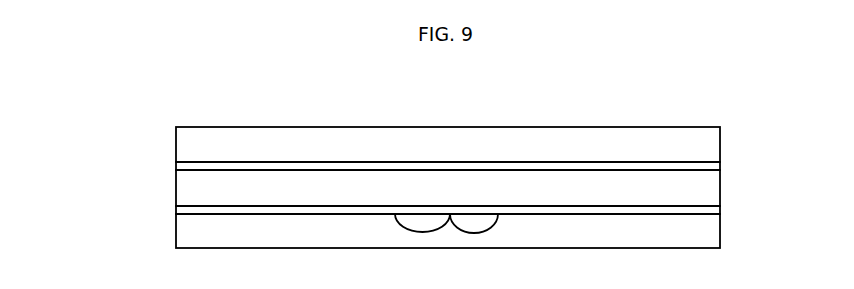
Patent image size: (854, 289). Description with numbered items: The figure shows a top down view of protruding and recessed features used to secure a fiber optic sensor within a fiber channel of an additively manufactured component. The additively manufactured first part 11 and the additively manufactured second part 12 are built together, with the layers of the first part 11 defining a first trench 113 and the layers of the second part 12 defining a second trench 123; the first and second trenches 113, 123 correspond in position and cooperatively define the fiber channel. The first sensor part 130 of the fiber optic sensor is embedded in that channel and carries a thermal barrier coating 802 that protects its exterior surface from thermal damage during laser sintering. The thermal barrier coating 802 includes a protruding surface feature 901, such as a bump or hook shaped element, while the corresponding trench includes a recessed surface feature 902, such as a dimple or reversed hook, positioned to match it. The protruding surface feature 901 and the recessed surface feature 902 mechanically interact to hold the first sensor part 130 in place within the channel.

The additively manufactured second part 12 is at (248, 143).
The thermal barrier coating 802 is at (208, 169).
The first sensor part 130 is at (202, 191).
The additively manufactured first part 11 is at (197, 228).
The protruding surface feature 901 is at (420, 225).
The recessed surface feature 902 is at (495, 222).
The second trench 123 is at (645, 162).
The first trench 113 is at (683, 214).